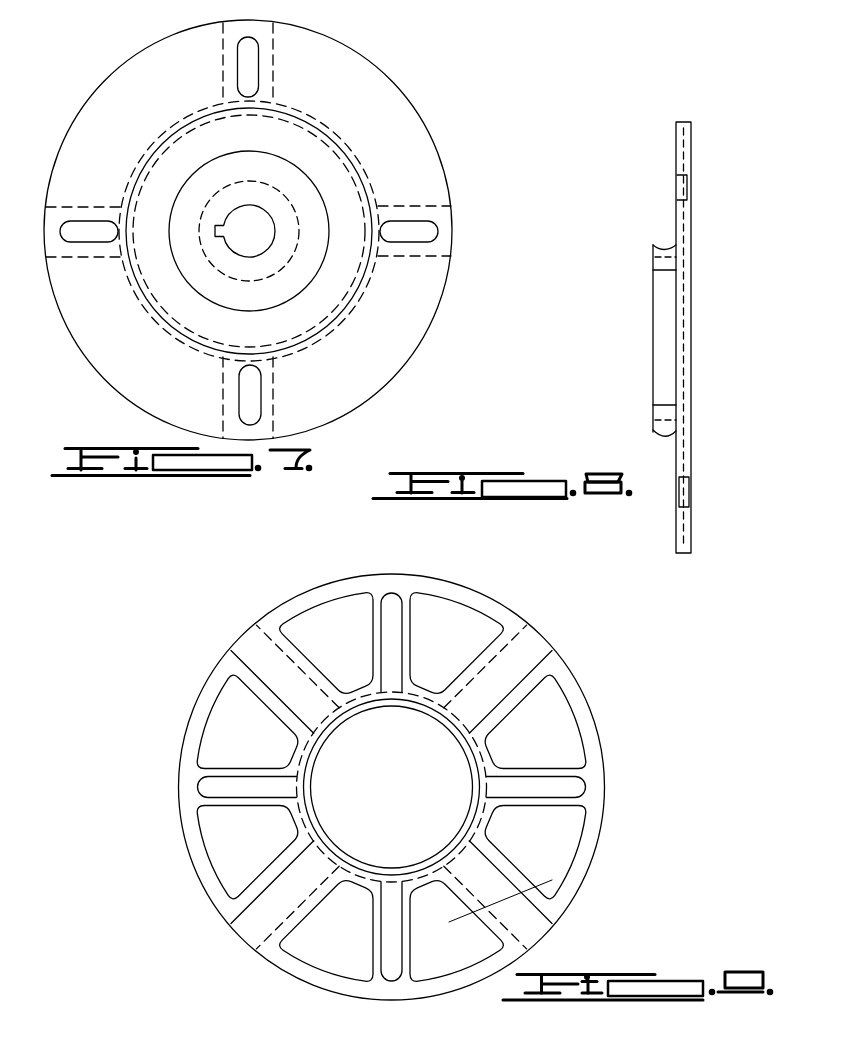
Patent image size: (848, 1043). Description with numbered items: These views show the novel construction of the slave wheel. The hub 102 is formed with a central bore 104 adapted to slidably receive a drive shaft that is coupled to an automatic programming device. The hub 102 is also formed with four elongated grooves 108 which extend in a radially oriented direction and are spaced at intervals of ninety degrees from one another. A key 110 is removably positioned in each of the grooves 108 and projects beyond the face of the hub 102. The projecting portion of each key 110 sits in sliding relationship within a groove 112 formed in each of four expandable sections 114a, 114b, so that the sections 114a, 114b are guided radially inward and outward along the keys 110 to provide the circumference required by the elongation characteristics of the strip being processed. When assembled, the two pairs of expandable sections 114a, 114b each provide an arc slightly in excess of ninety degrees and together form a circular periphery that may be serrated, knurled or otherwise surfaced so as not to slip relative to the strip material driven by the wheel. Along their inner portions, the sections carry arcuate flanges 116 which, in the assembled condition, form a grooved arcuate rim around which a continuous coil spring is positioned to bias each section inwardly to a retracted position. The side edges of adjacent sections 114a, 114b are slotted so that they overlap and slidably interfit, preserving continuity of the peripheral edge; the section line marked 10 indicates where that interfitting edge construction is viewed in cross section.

In FIG. 7, the hub 102 is at (414, 137).
In FIG. 7, the bore 104 is at (246, 210).
In FIG. 7, the elongated grooves 108 is at (243, 57).
In FIG. 7, the key 110 is at (258, 75).
In FIG. 9, the groove 112 is at (384, 625).
In FIG. 8, the expandable section 114a is at (690, 338).
In FIG. 9, the expandable section 114a is at (185, 770).
In FIG. 8, the expandable section 114b is at (686, 131).
In FIG. 9, the expandable section 114b is at (470, 563).
In FIG. 8, the arcuate flanges 116 is at (653, 262).
In FIG. 9, the arcuate flanges 116 is at (464, 754).
In FIG. 9, the section line 10- 10 is at (546, 871).